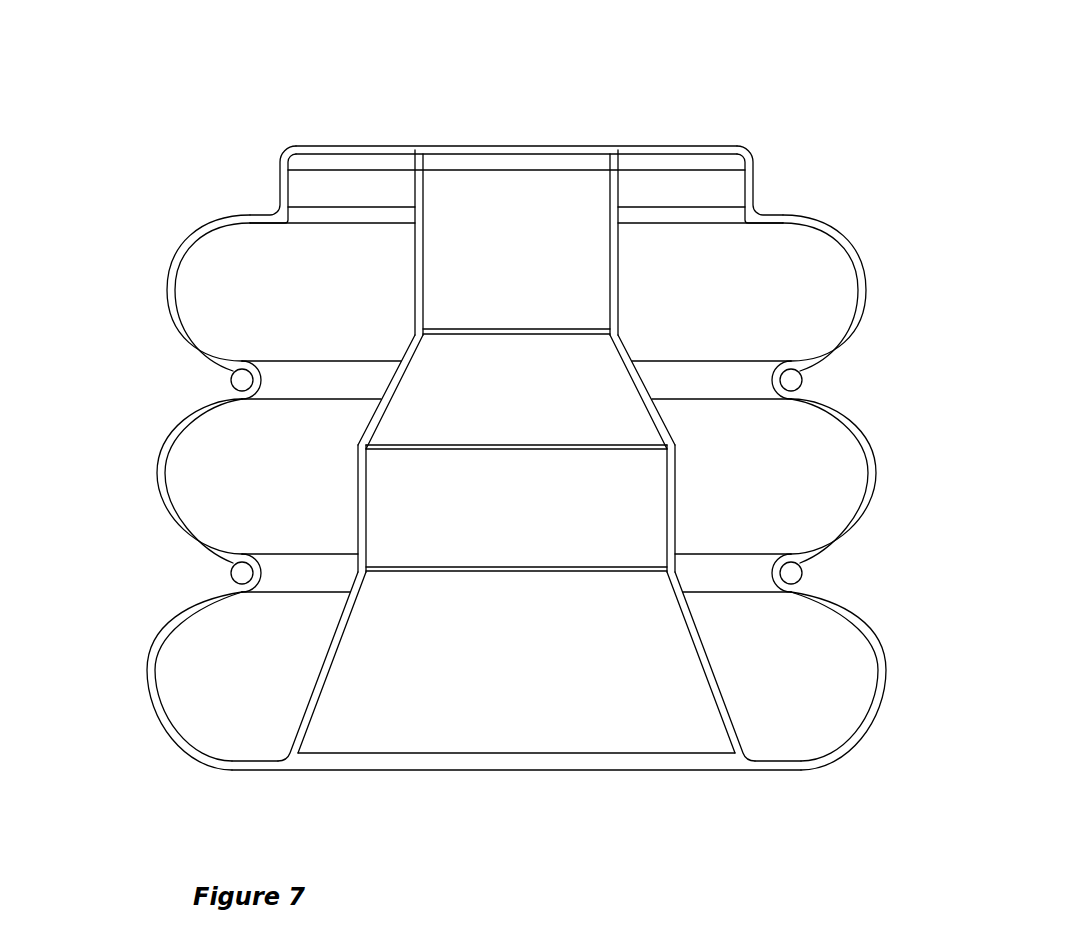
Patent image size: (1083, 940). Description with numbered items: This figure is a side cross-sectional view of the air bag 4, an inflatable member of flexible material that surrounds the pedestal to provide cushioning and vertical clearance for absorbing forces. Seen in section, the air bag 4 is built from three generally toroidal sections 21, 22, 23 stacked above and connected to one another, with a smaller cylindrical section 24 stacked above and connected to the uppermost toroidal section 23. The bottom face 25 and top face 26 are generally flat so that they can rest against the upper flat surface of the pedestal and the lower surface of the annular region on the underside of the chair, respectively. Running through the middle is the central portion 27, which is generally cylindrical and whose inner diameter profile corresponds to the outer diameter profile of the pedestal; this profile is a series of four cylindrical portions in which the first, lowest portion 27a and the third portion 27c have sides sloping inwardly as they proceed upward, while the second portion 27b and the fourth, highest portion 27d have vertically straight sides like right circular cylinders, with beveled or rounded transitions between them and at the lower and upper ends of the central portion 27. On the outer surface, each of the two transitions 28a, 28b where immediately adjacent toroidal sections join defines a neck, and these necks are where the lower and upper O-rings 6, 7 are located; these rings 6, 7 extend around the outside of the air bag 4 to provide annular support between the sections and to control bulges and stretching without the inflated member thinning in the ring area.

The air bag 4 is at (695, 62).
The lower ring 6 is at (240, 573).
The upper ring 7 is at (802, 378).
The toroidal section 21 is at (150, 668).
The toroidal section 22 is at (160, 447).
The toroidal section 23 is at (195, 238).
The cylindrical section 24 is at (281, 178).
The bottom face 25 is at (253, 772).
The top face 26 is at (368, 146).
The central portion 27 is at (528, 484).
The first cylindrical portion 27a is at (548, 667).
The second cylindrical portion 27b is at (590, 515).
The third cylindrical portion 27c is at (594, 377).
The fourth cylindrical portion 27d is at (545, 268).
The transition 28a is at (293, 568).
The transition 28b is at (298, 377).